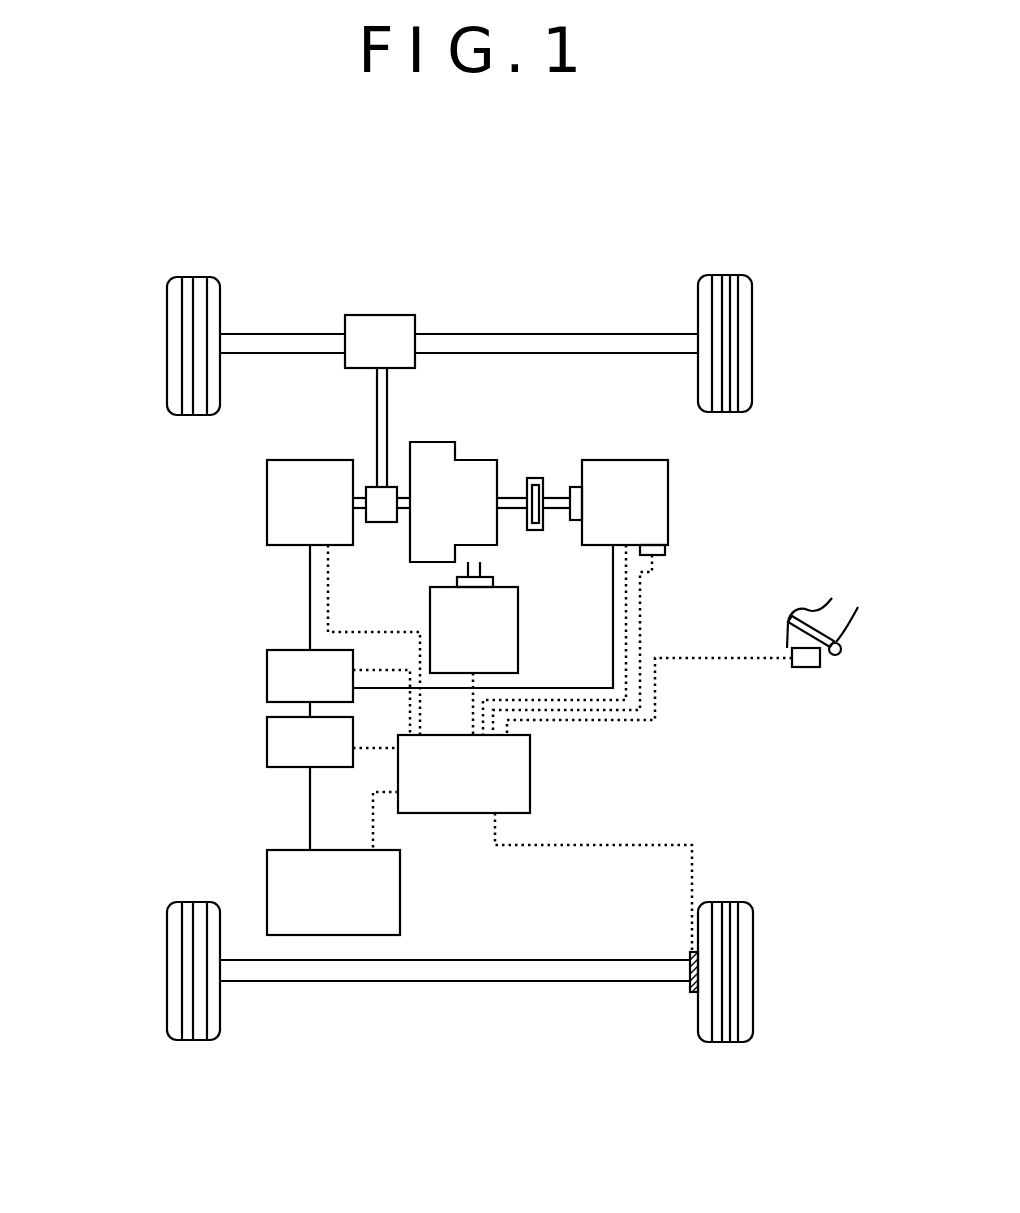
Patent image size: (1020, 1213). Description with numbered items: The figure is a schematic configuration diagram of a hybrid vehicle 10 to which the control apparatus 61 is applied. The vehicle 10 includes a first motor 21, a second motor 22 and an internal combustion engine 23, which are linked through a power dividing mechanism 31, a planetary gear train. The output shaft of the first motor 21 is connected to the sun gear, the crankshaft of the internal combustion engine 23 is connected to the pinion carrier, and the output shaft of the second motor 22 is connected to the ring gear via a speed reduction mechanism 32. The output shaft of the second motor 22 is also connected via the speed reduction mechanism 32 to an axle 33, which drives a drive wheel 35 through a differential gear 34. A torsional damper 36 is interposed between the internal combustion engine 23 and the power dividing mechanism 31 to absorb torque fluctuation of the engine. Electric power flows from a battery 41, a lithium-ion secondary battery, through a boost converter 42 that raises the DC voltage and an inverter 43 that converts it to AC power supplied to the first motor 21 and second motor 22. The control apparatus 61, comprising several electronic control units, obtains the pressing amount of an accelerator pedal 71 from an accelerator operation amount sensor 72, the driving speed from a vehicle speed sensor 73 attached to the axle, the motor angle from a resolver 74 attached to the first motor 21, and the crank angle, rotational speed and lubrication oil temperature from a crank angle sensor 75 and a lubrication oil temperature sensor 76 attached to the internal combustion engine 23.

The vehicle 10 is at (122, 240).
The drive wheel 35 is at (193, 277).
The differential gear 34 is at (378, 315).
The axle 33 is at (377, 415).
The second motor 22 is at (267, 485).
The speed reduction mechanism 32 is at (385, 522).
The power dividing mechanism 31 is at (485, 460).
The torsional damper 36 is at (530, 478).
The crank angle sensor 75 is at (575, 487).
The internal combustion engine 23 is at (630, 460).
The lubrication oil temperature sensor 76 is at (665, 552).
The resolver 74 is at (493, 582).
The first motor 21 is at (518, 630).
The inverter 43 is at (267, 677).
The boost converter 42 is at (267, 742).
The battery 41 is at (267, 870).
The control apparatus 61 is at (530, 775).
The accelerator pedal 71 is at (790, 622).
The accelerator operation amount sensor 72 is at (805, 667).
The vehicle speed sensor 73 is at (690, 990).